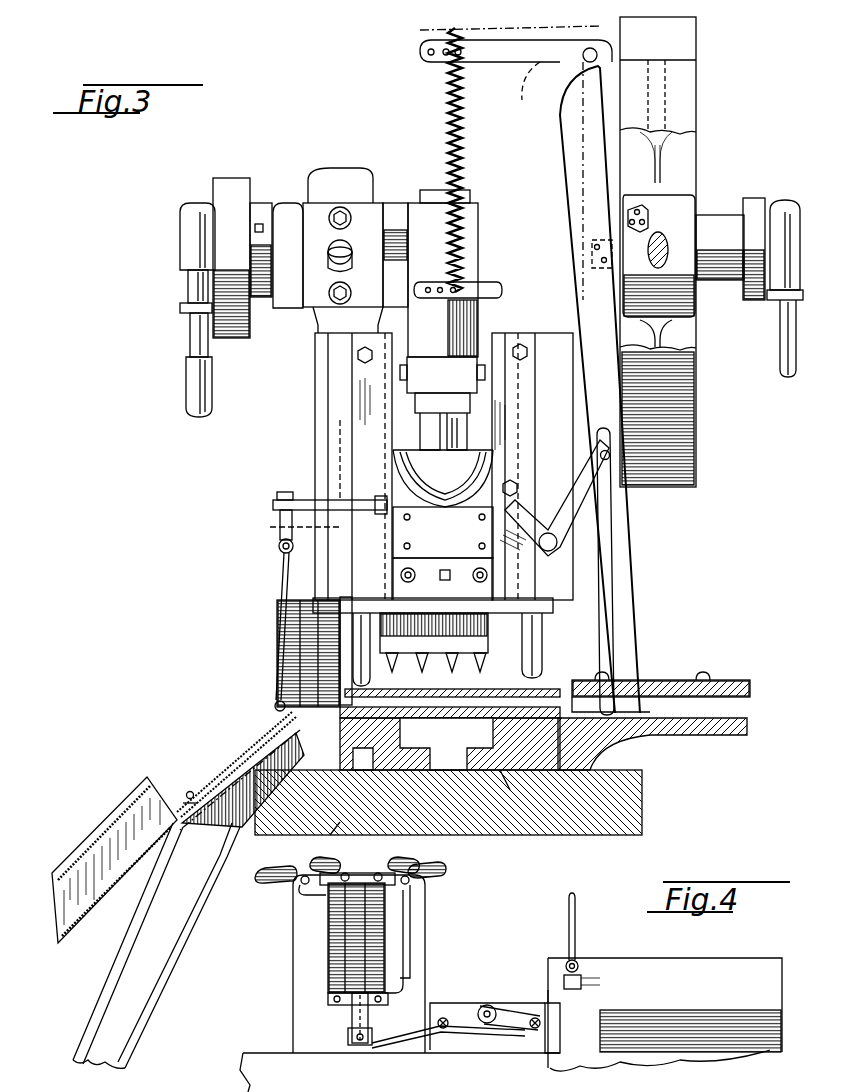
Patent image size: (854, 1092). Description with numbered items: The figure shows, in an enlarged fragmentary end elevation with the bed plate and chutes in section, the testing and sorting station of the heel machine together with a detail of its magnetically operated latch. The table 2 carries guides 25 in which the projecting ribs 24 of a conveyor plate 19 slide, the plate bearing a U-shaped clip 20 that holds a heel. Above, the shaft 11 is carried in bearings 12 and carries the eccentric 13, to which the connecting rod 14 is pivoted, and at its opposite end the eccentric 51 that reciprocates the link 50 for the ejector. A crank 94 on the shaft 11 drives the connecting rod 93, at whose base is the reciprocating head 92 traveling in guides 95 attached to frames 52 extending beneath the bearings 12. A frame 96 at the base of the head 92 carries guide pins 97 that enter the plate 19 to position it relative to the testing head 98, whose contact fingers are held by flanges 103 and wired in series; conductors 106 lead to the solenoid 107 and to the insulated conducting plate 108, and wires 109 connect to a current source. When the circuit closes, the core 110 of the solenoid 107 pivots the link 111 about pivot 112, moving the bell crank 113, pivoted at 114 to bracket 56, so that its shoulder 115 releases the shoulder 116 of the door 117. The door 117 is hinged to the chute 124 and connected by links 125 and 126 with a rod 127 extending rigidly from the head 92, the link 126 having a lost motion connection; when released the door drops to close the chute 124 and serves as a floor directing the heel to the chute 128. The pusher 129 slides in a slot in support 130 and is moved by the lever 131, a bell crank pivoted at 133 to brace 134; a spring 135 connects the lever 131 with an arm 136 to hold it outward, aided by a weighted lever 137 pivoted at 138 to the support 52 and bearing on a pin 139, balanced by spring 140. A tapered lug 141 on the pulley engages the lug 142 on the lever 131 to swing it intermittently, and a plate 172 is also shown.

In FIG. 3, the table 2 is at (643, 802).
In FIG. 3, the shaft 11 is at (717, 228).
In FIG. 3, the bearings 12 is at (310, 225).
In FIG. 3, the eccentric 13 is at (228, 186).
In FIG. 3, the connecting rod 14 is at (187, 383).
In FIG. 3, the plate 19 is at (437, 720).
In FIG. 3, the U-shaped clip 20 is at (510, 688).
In FIG. 3, the projecting ribs 24 is at (515, 762).
In FIG. 3, the guides 25 is at (485, 780).
In FIG. 3, the link 50 is at (782, 364).
In FIG. 3, the eccentric 51 is at (753, 205).
In FIG. 3, the frames 52 is at (330, 345).
In FIG. 4, the bracket 56 is at (468, 1005).
In FIG. 3, the reciprocating head 92 is at (400, 478).
In FIG. 3, the connecting rod 93 is at (425, 316).
In FIG. 3, the crank 94 is at (392, 225).
In FIG. 3, the guides 95 is at (360, 420).
In FIG. 3, the frame 96 is at (514, 608).
In FIG. 3, the guide pins 97 is at (360, 684).
In FIG. 3, the testing head 98 is at (488, 634).
In FIG. 3, the flanges 103 is at (283, 722).
In FIG. 4, the conductors 106 is at (283, 874).
In FIG. 3, the solenoid 107 is at (280, 623).
In FIG. 4, the solenoid 107 is at (330, 952).
In FIG. 4, the insulated conducting plate 108 is at (358, 873).
In FIG. 4, the wires 109 is at (428, 868).
In FIG. 4, the core 110 is at (352, 1015).
In FIG. 4, the link 111 is at (400, 1040).
In FIG. 4, the pivot 112 is at (445, 1032).
In FIG. 4, the bell crank 113 is at (533, 1010).
In FIG. 4, the pivot 114 is at (536, 1034).
In FIG. 4, the shoulder 115 is at (554, 1002).
In FIG. 4, the shoulder 116 is at (552, 997).
In FIG. 3, the door 117 is at (262, 745).
In FIG. 4, the door 117 is at (737, 947).
In FIG. 3, the chute 124 is at (188, 931).
In FIG. 3, the link 125 is at (283, 577).
In FIG. 4, the link 125 is at (576, 918).
In FIG. 3, the link 126 is at (282, 522).
In FIG. 3, the rod 127 is at (320, 500).
In FIG. 3, the chute 128 is at (97, 828).
In FIG. 3, the pusher 129 is at (752, 688).
In FIG. 3, the support 130 is at (640, 742).
In FIG. 3, the lever 131 is at (622, 576).
In FIG. 3, the pivot 133 is at (590, 48).
In FIG. 3, the brace 134 is at (532, 78).
In FIG. 3, the spring 135 is at (464, 92).
In FIG. 3, the arm 136 is at (492, 298).
In FIG. 3, the weighted lever 137 is at (585, 508).
In FIG. 3, the pivot 138 is at (560, 544).
In FIG. 3, the pin 139 is at (610, 462).
In FIG. 3, the spring 140 is at (490, 536).
In FIG. 3, the tapered lug 141 is at (645, 212).
In FIG. 3, the lug 142 is at (617, 250).
In FIG. 3, the plate 172 is at (600, 678).